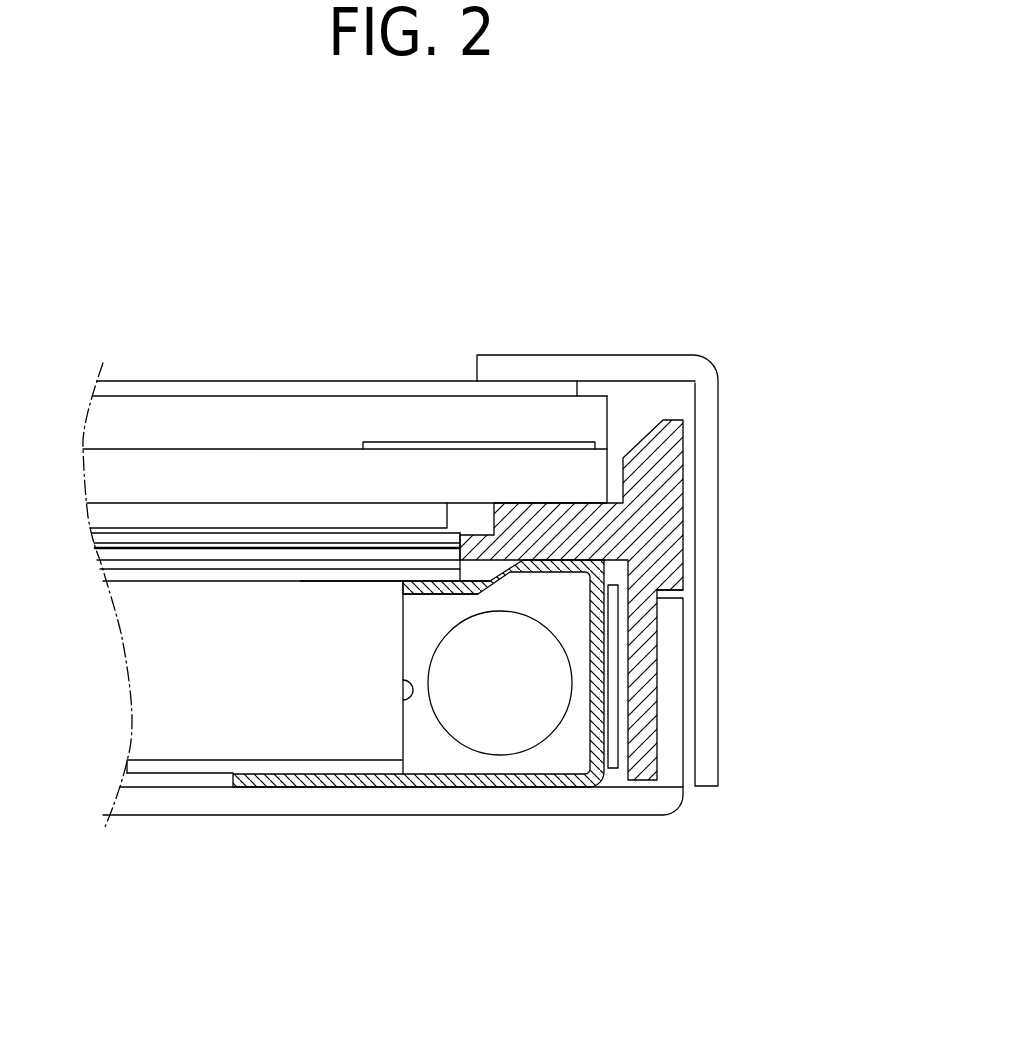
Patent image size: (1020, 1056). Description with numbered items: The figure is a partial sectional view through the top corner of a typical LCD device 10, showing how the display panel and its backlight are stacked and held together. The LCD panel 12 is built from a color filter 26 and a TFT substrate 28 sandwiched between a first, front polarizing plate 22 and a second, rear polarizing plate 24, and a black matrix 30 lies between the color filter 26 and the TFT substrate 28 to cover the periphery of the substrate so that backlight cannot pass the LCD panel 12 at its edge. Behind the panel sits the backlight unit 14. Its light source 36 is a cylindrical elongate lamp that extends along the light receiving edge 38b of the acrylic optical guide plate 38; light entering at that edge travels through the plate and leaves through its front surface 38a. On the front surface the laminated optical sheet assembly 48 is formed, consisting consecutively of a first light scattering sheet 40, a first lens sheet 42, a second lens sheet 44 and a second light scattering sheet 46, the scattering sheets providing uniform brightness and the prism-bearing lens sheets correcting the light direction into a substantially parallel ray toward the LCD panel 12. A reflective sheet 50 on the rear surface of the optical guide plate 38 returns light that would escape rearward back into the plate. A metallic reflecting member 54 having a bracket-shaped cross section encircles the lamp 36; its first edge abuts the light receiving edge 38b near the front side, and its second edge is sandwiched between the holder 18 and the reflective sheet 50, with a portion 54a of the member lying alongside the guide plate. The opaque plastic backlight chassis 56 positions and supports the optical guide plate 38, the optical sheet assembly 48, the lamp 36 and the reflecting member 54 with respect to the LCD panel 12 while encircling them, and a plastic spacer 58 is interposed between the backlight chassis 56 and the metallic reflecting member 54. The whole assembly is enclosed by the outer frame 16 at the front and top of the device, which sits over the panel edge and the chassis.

The LCD device 10 is at (272, 220).
The LCD panel 12 is at (473, 292).
The backlight unit 14 is at (505, 937).
The upper housing 16 is at (707, 388).
The holder 18 is at (585, 805).
The first polarizing plate 22 is at (247, 387).
The second polarizing plate 24 is at (295, 515).
The color filter 26 is at (342, 418).
The TFT substrate 28 is at (350, 470).
The black matrix 30 is at (433, 443).
The light source 36 is at (468, 722).
The optical guide plate 38 is at (356, 745).
The front surface 38a is at (353, 580).
The light receiving edge 38b is at (400, 683).
The first light scattering sheet 40 is at (307, 577).
The first lens sheet 42 is at (280, 565).
The second lens sheet 44 is at (253, 557).
The second light scattering sheet 46 is at (230, 538).
The optical sheet assembly 48 is at (283, 883).
The reflective sheet 50 is at (320, 762).
The metallic reflecting member 54 is at (418, 735).
The flange of lamp cover 54a is at (425, 595).
The backlight chassis 56 is at (672, 530).
The spacer 58 is at (613, 638).